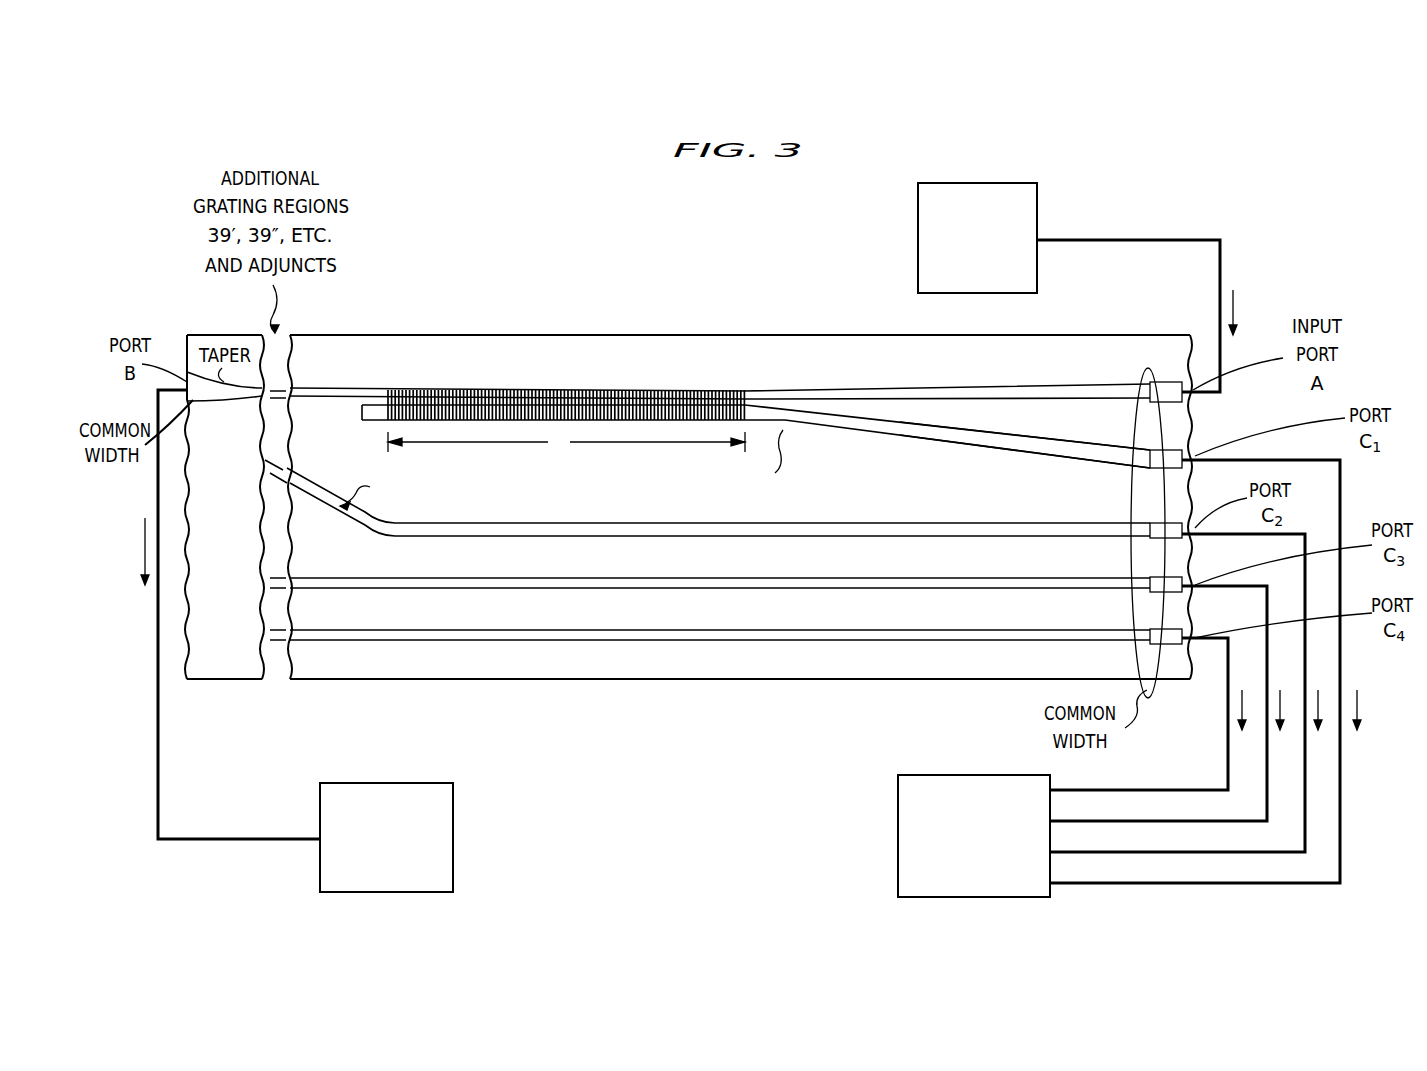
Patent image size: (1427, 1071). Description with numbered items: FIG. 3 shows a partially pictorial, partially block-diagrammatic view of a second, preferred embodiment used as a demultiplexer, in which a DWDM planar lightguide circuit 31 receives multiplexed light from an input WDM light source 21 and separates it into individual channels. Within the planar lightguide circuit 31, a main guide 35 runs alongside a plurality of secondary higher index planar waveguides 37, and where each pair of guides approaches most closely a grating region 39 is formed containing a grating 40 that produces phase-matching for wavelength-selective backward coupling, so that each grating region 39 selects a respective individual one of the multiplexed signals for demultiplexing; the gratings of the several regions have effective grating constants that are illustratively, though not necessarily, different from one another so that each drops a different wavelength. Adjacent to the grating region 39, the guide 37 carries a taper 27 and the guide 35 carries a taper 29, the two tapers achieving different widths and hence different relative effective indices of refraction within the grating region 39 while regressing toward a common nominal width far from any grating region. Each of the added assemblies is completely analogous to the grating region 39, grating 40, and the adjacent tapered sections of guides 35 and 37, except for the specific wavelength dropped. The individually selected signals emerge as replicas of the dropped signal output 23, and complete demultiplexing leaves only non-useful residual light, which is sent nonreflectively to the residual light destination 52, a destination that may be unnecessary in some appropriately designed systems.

The input WDM light source 21 is at (958, 183).
The dropped signal output 23 is at (898, 840).
The taper 27 is at (913, 437).
The taper 29 is at (1032, 386).
The DWDM planar lightguide circuit 31 is at (522, 272).
The guide 35 is at (849, 387).
The secondary higher index planar waveguide 37 is at (938, 449).
The grating region 39 is at (540, 388).
The grating 40 is at (388, 410).
The residual light destination 52 is at (455, 838).